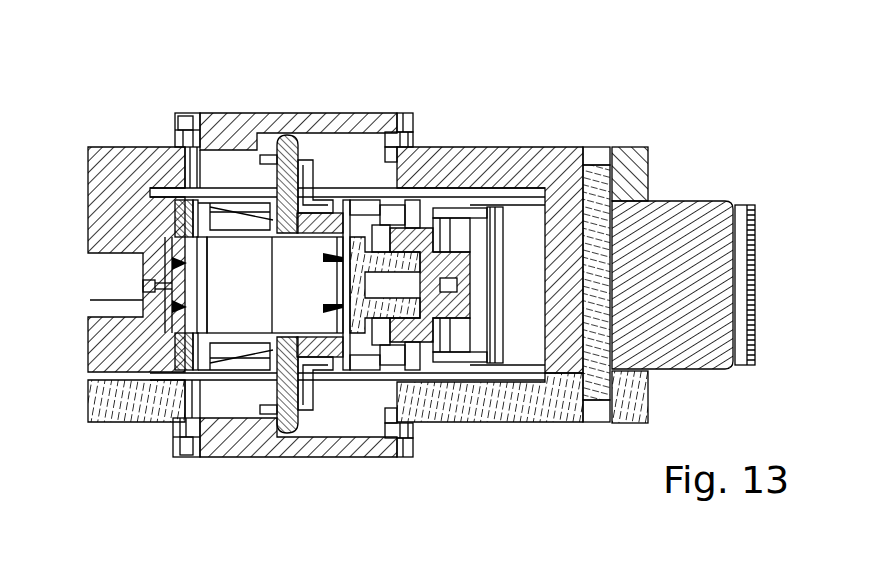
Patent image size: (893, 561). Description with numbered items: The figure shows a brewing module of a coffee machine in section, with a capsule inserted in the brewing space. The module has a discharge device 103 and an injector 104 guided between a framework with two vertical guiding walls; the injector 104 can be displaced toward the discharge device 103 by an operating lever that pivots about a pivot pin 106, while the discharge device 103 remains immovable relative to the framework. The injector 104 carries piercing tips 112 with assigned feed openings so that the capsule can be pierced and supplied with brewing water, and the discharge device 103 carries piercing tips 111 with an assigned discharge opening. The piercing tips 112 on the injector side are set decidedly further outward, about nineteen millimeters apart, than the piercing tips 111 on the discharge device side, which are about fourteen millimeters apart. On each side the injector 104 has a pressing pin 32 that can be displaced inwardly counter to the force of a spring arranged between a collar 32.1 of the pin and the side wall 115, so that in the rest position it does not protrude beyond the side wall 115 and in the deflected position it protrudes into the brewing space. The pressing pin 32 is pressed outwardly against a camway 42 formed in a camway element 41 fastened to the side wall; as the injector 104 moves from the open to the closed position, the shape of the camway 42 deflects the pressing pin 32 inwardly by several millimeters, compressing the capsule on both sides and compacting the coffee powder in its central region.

The pressing pin 32 is at (290, 190).
The collar 32.1 is at (268, 158).
The camway element 41 is at (243, 130).
The camway 42 is at (303, 407).
The discharge device 103 is at (140, 373).
The injector 104 is at (425, 372).
The pivot pin 106 is at (630, 200).
The piercing tip 111 is at (176, 243).
The piercing tip 112 is at (338, 250).
The side wall 115 is at (312, 345).